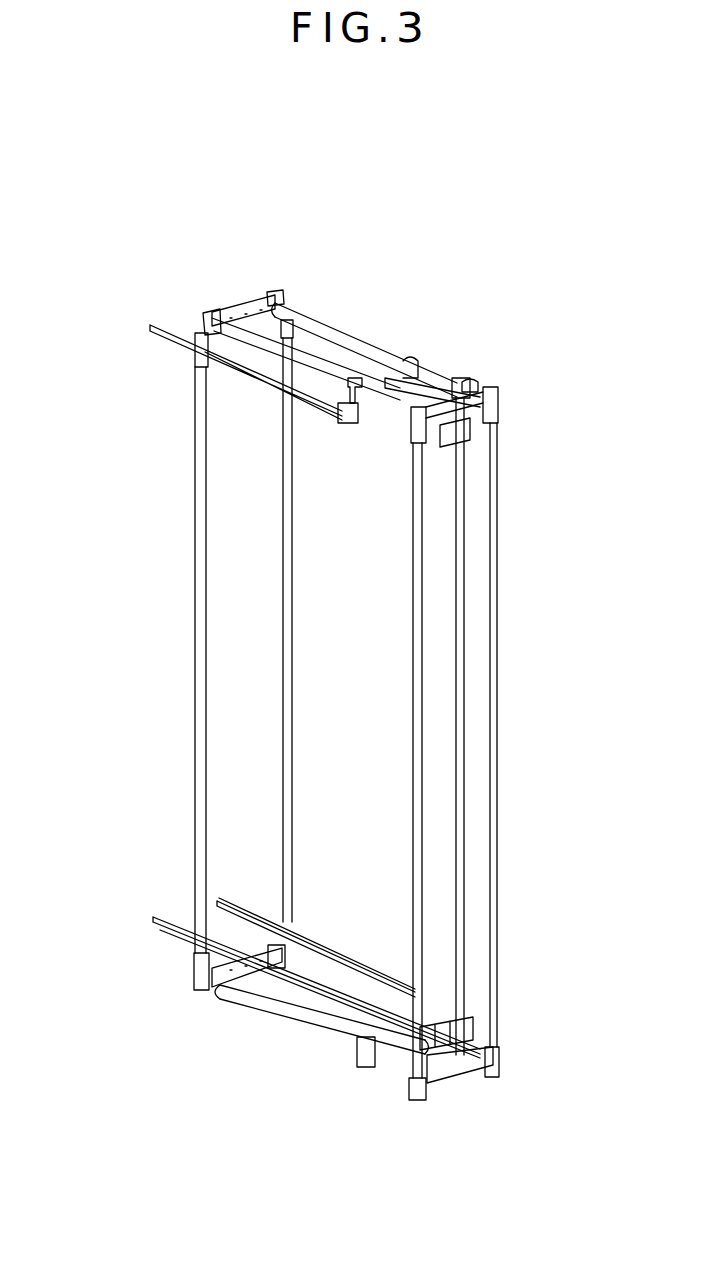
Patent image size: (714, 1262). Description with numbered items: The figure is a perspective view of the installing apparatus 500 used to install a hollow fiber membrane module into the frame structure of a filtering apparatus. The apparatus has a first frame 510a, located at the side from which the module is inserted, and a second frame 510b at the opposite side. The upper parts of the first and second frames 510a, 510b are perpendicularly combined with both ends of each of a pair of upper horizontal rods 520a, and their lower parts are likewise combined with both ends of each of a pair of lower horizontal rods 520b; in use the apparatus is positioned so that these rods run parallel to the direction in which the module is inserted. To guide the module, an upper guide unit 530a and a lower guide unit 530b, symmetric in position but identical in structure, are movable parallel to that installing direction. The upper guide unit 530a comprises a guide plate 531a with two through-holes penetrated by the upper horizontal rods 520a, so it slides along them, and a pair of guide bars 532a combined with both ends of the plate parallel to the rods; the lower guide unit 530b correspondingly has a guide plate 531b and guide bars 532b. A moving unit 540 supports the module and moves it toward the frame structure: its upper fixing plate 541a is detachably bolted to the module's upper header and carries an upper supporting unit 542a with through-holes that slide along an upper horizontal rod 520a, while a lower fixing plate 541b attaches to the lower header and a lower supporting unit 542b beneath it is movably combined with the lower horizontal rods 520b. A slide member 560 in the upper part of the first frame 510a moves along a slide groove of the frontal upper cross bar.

The installing apparatus 500 is at (617, 225).
The first frame 510a is at (160, 604).
The second frame 510b is at (503, 678).
The upper horizontal rods 520a is at (312, 323).
The lower horizontal rods 520b is at (213, 992).
The upper guide unit 530a is at (371, 345).
The guide plate 531a is at (390, 382).
The guide bars 532a is at (305, 397).
The lower guide unit 530b is at (316, 991).
The guide plate 531b is at (360, 1060).
The guide bars 532b is at (320, 992).
The moving unit 540 is at (470, 562).
The upper fixing plate 541a is at (453, 435).
The upper supporting unit 542a is at (468, 388).
The lower fixing plate 541b is at (442, 1028).
The lower supporting unit 542b is at (445, 1063).
The slide member 560 is at (247, 317).